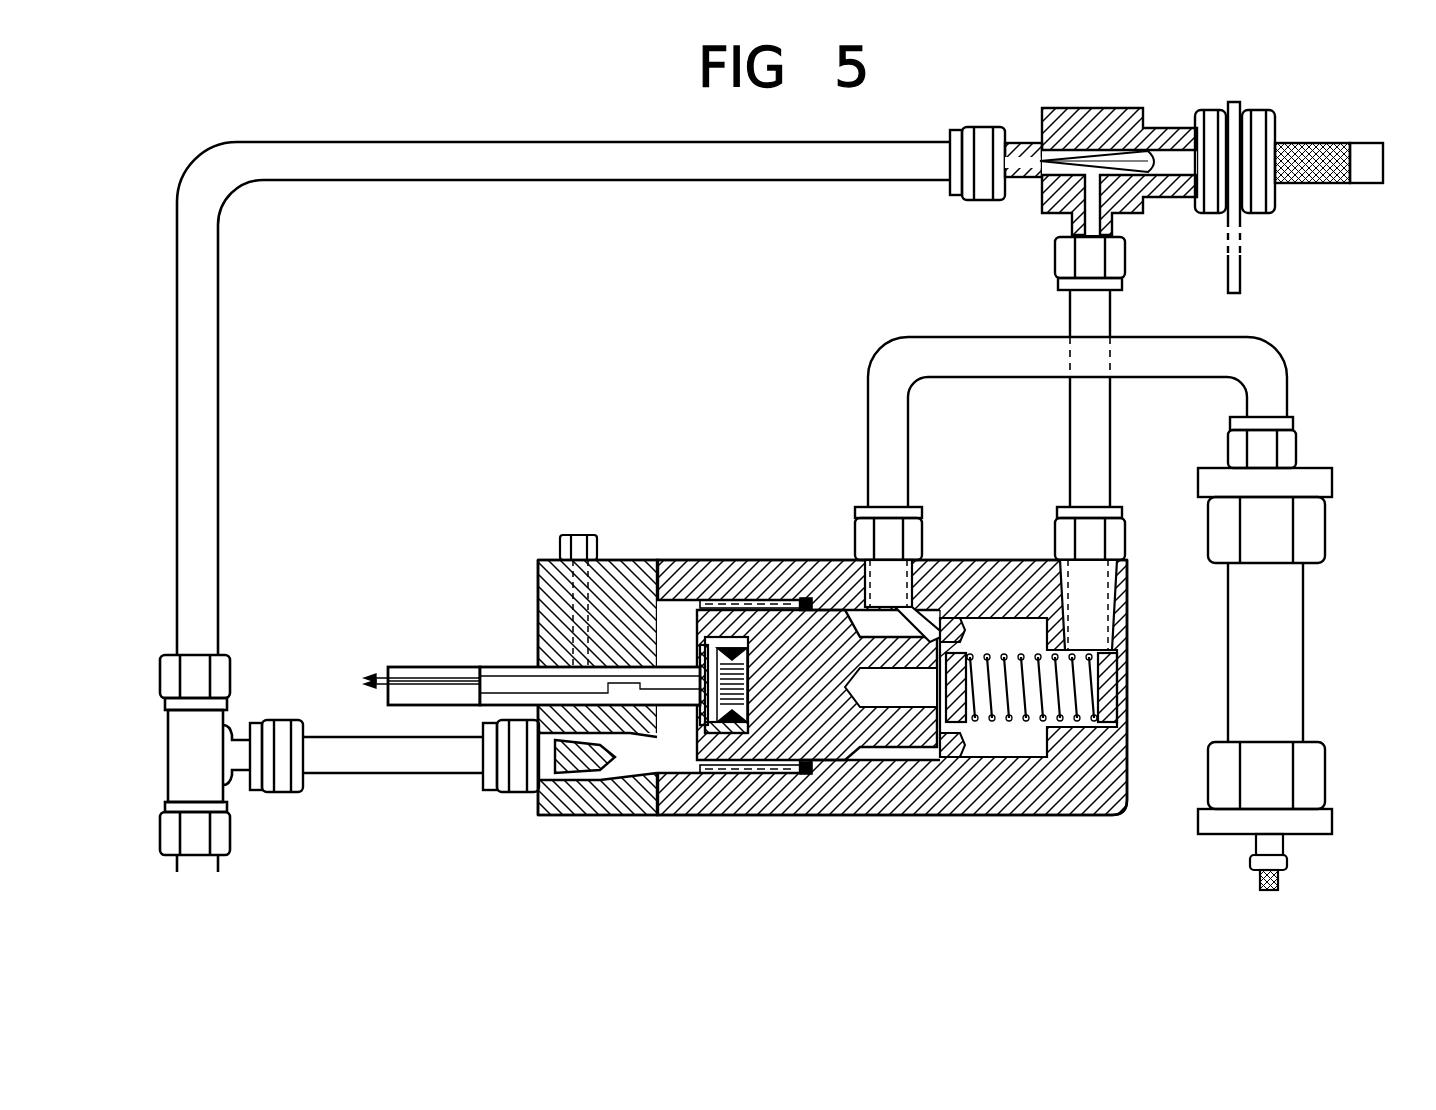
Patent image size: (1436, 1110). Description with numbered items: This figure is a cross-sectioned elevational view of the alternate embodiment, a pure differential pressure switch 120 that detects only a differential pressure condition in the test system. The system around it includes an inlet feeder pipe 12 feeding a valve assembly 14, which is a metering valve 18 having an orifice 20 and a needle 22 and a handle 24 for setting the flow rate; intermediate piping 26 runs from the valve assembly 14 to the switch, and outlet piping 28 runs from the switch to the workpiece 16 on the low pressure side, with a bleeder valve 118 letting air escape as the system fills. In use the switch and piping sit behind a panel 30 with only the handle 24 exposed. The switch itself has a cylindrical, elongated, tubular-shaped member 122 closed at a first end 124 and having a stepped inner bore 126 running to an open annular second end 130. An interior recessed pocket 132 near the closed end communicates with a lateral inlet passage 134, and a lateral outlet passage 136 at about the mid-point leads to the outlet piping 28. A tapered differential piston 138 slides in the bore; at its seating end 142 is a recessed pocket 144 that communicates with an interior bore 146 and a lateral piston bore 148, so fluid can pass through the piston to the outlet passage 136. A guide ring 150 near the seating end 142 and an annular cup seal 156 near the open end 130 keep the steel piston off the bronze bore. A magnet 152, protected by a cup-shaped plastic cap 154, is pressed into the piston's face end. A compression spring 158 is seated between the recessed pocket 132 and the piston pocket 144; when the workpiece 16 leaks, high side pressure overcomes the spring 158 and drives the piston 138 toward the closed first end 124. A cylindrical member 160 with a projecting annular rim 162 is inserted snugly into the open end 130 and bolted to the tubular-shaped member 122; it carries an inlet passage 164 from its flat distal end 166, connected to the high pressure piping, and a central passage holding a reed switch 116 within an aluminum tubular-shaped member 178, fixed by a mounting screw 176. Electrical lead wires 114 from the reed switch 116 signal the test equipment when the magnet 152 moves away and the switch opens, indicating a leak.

The inlet feeder pipe 12 is at (222, 572).
The valve assembly 14 is at (1300, 212).
The workpiece 16 is at (1308, 672).
The metering valve 18 is at (1160, 137).
The orifice 20 is at (1030, 162).
The needle 22 is at (1117, 153).
The handle 24 is at (1277, 118).
The intermediate piping 26 is at (1068, 313).
The outlet piping 28 is at (1288, 377).
The panel 30 is at (1242, 270).
The electrical lead wires 114 is at (378, 670).
The reed switch 116 is at (580, 682).
The bleeder valve 118 is at (1290, 862).
The differential pressure switch 120 is at (563, 412).
The tubular-shaped member 122 is at (693, 558).
The closed first end 124 is at (1142, 624).
The inner bore 126 is at (1000, 618).
The open annular second end 130 is at (647, 558).
The interior recessed pocket 132 is at (1115, 680).
The lateral inlet passage 134 is at (1088, 593).
The lateral outlet passage 136 is at (905, 601).
The differential piston 138 is at (897, 745).
The seating end 142 is at (968, 735).
The recessed pocket 144 is at (947, 720).
The interior bore 146 is at (878, 735).
The lateral piston bore 148 is at (950, 600).
The guide ring 150 is at (955, 600).
The magnet 152 is at (765, 640).
The plastic cap 154 is at (733, 737).
The annular cup seal 156 is at (793, 770).
The compression spring 158 is at (1113, 727).
The cylindrical member 160 is at (622, 580).
The annular rim 162 is at (738, 645).
The inlet passage 164 is at (593, 760).
The distal end 166 is at (538, 568).
The mounting screw 176 is at (572, 533).
The tubular-shaped member 178 is at (440, 665).